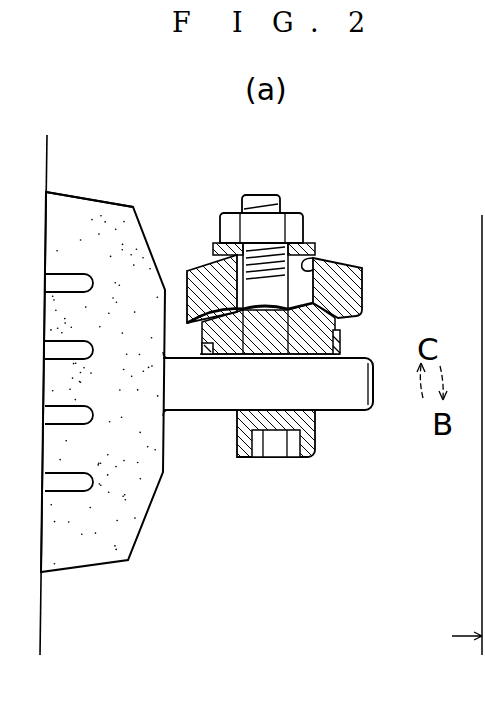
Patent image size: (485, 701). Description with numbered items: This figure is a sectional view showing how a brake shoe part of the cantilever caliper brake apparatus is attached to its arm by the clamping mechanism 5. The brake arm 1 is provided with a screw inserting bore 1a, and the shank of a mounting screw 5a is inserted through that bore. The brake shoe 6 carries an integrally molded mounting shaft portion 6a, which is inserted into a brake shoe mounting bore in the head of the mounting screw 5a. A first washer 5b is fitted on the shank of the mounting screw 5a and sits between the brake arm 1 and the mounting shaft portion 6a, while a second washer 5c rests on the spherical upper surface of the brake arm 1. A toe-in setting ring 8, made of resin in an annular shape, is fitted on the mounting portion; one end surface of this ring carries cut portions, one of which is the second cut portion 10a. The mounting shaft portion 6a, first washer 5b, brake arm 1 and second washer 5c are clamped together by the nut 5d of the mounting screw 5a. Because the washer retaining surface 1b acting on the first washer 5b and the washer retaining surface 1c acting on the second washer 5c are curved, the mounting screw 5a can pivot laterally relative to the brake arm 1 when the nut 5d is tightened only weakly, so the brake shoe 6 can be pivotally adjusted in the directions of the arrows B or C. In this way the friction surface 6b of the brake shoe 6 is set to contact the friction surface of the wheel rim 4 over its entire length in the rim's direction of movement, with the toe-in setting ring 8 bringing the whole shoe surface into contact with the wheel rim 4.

The brake arm 1 is at (193, 270).
The screw inserting bore 1a is at (305, 261).
The washer retaining surface 1b is at (343, 322).
The washer retaining surface 1c is at (335, 258).
The wheel rim 4 is at (41, 614).
The clamping mechanism 5 is at (364, 200).
The mounting screw 5a is at (242, 457).
The first washer 5b is at (202, 343).
The second washer 5c is at (213, 243).
The nut 5d is at (298, 213).
The brake shoe 6 is at (133, 520).
The mounting shaft portion 6a is at (374, 412).
The friction surface 6b is at (46, 200).
The toe-in setting ring 8 is at (205, 358).
The second cut portion 10a is at (362, 353).